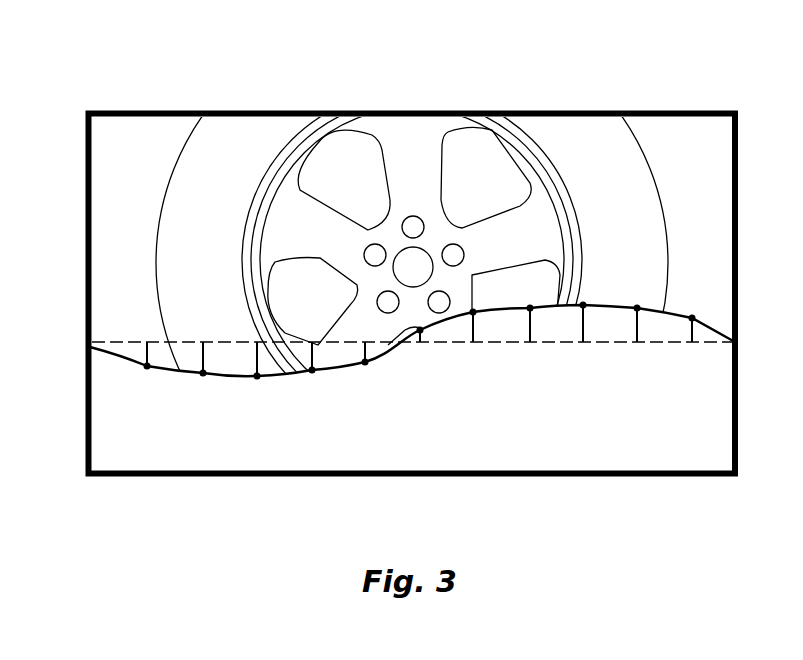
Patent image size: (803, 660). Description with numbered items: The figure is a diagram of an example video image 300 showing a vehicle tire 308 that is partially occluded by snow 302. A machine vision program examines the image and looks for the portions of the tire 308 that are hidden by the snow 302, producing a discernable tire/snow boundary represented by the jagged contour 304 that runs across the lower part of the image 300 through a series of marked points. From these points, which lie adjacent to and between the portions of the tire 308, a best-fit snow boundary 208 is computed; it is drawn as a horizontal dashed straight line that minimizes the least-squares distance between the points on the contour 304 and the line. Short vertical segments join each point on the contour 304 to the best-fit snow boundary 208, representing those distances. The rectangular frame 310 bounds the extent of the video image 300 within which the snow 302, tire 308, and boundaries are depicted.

The video image 300 is at (420, 93).
The bounding box of image 310 is at (182, 98).
The tire 308 is at (158, 210).
The best-fit snow boundary 208 is at (115, 342).
The contact profile curve 304 is at (288, 372).
The snow 302 is at (393, 450).